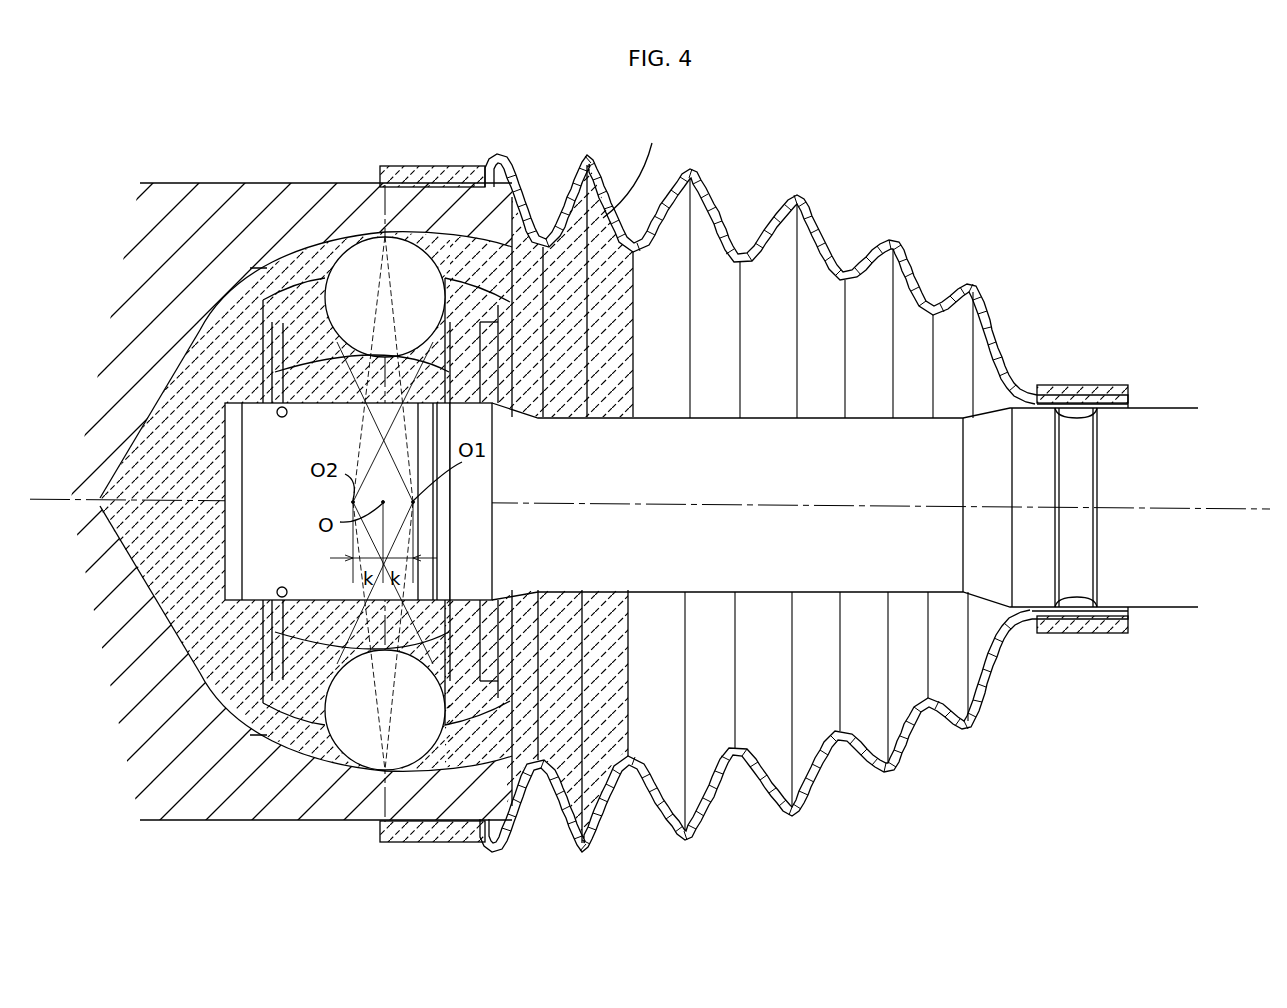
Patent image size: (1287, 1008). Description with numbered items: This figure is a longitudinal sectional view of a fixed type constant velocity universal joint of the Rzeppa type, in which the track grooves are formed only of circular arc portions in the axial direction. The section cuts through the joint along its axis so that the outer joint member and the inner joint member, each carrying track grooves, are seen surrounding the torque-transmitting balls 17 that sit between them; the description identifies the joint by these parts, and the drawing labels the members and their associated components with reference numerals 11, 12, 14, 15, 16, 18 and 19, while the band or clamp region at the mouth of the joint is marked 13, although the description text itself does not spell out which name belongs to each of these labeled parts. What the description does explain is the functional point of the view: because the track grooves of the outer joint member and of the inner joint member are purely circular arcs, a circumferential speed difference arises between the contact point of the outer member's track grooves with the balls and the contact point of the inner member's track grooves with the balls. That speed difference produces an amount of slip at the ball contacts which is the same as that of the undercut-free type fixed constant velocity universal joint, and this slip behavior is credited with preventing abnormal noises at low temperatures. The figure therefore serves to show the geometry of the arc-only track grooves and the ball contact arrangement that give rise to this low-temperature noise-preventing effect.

The outer joint member 11 is at (262, 326).
The inner joint member 12 is at (474, 230).
The boot band 13 is at (437, 170).
The cage 14 is at (282, 743).
The snap ring 15 is at (262, 362).
The outer race cup 16 is at (510, 625).
The ball 17 is at (360, 262).
The cage window 18 is at (497, 695).
The inner race track 19 is at (342, 757).